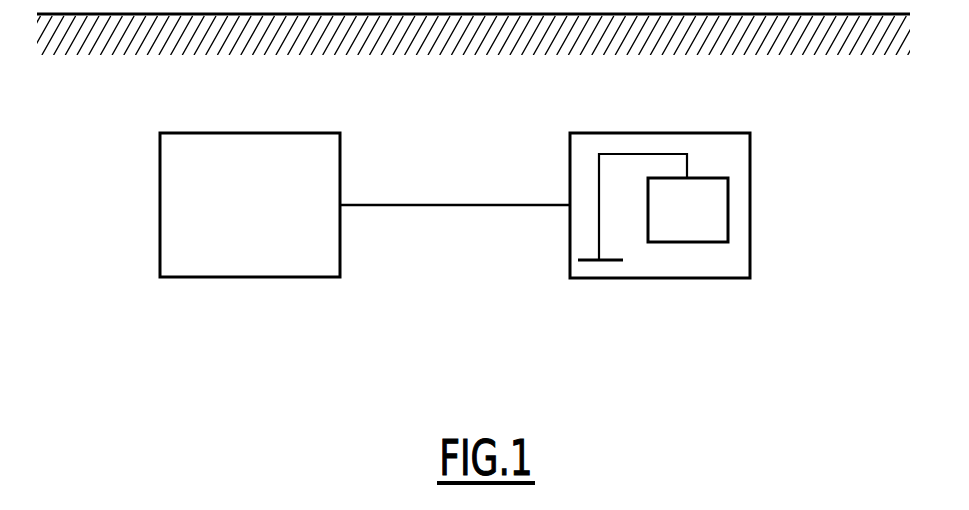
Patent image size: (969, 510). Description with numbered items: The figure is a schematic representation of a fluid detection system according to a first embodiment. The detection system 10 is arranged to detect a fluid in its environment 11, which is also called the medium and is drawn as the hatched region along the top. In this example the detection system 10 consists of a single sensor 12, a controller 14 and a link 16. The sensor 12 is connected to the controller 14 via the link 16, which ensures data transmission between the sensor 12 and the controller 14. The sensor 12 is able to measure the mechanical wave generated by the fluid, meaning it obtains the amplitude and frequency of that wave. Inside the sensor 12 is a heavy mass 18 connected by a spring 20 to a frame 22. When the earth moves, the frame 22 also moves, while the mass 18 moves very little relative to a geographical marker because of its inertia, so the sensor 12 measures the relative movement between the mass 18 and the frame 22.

The detection system 10 is at (382, 323).
The environment 11 is at (826, 304).
The sensor 12 is at (752, 213).
The controller 14 is at (264, 219).
The link 16 is at (408, 207).
The heavy mass 18 is at (672, 225).
The spring 20 is at (692, 162).
The frame 22 is at (598, 224).